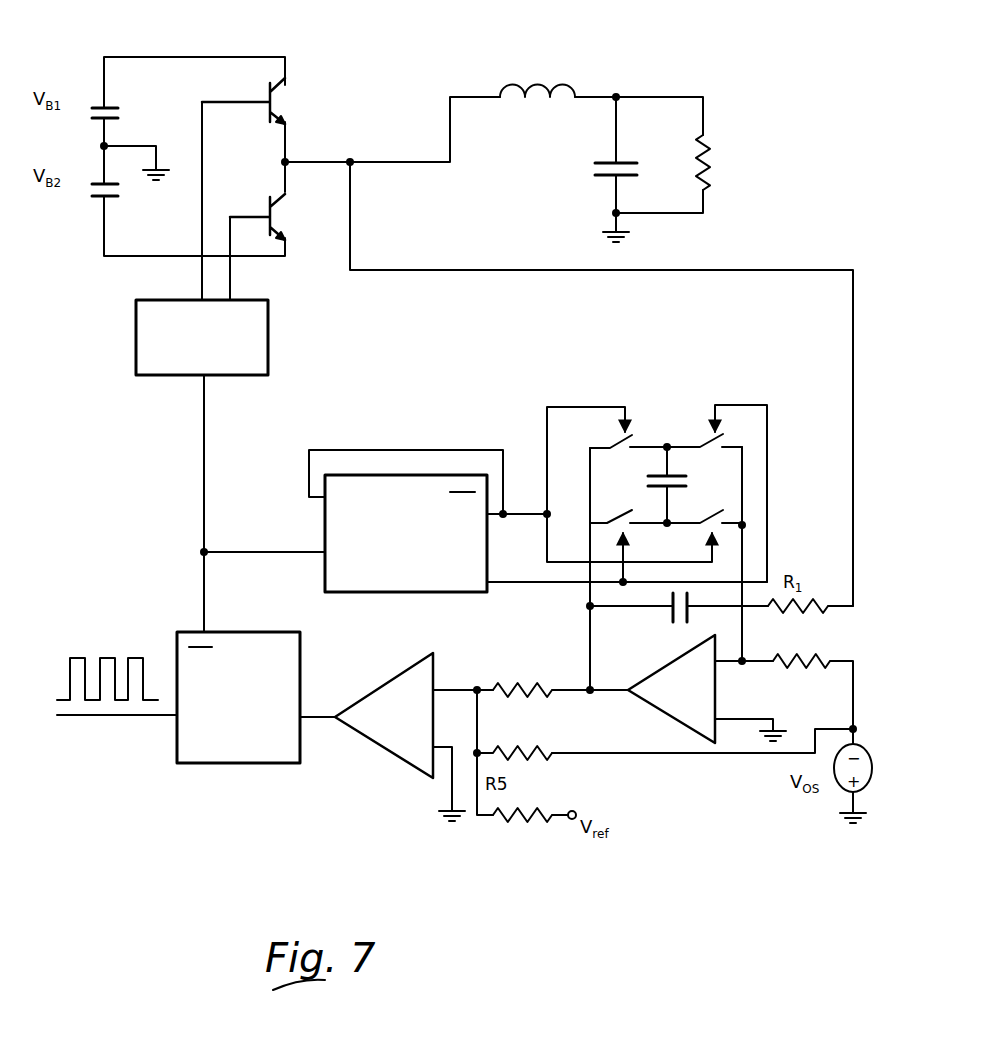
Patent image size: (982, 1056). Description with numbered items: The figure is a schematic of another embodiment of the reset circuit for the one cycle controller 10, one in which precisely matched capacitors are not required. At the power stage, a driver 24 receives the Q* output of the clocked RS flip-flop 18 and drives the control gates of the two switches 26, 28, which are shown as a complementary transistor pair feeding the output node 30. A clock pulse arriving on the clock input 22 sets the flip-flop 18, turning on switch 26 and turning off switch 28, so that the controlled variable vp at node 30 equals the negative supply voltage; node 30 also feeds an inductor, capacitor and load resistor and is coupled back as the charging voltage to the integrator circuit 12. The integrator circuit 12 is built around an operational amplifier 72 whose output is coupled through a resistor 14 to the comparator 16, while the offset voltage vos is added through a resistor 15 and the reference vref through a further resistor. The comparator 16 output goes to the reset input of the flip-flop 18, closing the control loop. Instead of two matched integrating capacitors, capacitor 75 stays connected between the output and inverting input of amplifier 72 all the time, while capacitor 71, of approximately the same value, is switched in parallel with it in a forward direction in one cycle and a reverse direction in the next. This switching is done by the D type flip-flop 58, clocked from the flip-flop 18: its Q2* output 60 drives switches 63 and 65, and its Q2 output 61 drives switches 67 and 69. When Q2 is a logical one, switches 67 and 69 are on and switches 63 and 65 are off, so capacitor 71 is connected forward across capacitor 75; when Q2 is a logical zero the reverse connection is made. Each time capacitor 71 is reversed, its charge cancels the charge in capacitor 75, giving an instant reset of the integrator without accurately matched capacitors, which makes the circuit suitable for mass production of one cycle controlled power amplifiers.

The controller 10 is at (632, 90).
The integrator circuit 12 is at (730, 802).
The resistor 14 is at (552, 683).
The resistor 15 is at (547, 756).
The comparator 16 is at (403, 763).
The clocked RS flip-flop 18 is at (278, 763).
The clock input 22 is at (147, 717).
The driver 24 is at (268, 345).
The switch 26 is at (288, 230).
The switch 28 is at (288, 95).
The output node 30 is at (360, 150).
The D type flip-flop 58 is at (325, 520).
The Q2* output 60 is at (522, 514).
The Q2 output 61 is at (500, 580).
The switch 63 is at (623, 400).
The switch 65 is at (722, 537).
The switch 67 is at (727, 412).
The switch 69 is at (613, 533).
The capacitor 71 is at (655, 468).
The operational amplifier 72 is at (715, 700).
The capacitor 75 is at (693, 600).